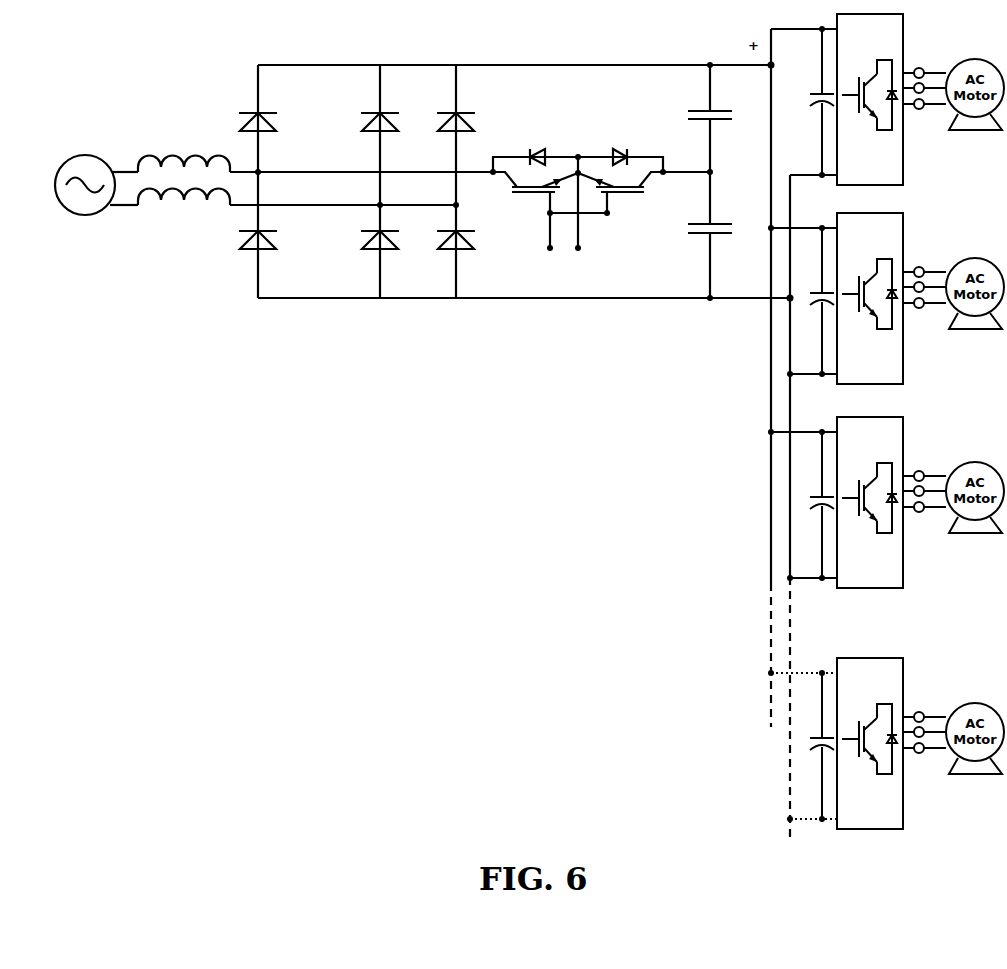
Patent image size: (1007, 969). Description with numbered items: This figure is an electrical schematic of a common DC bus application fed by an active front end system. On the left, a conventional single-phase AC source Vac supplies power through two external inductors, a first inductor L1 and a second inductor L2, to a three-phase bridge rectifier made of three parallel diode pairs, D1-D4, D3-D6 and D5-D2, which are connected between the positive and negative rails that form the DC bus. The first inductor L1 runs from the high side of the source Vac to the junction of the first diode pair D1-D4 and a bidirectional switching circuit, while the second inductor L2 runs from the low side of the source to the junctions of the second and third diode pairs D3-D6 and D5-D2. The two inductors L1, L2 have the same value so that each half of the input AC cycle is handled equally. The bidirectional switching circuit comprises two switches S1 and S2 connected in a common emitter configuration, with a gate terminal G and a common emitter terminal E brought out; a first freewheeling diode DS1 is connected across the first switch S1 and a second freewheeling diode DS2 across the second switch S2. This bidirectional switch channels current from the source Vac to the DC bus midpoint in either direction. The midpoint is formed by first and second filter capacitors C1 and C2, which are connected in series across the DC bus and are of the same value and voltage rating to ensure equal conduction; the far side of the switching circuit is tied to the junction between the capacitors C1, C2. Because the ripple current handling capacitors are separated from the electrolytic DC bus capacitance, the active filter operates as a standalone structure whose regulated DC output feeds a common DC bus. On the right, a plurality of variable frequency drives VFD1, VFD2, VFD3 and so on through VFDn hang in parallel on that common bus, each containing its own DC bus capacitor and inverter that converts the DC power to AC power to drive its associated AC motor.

The single-phase AC voltage source Vac is at (79, 174).
The first inductor L1 is at (184, 155).
The second inductor L2 is at (184, 219).
The diode D1 is at (270, 118).
The diode D2 is at (464, 231).
The diode D3 is at (388, 113).
The diode D4 is at (270, 236).
The diode D5 is at (464, 113).
The diode D6 is at (388, 231).
The first freewheeling diode DS1 is at (534, 145).
The second freewheeling diode DS2 is at (619, 145).
The first switch S1 is at (535, 192).
The second switch S2 is at (620, 192).
The gate terminal G is at (549, 241).
The emitter terminal E is at (576, 257).
The first filter capacitor C1 is at (725, 118).
The second filter capacitor C2 is at (727, 235).
The variable frequency drive 1 VFD1 is at (887, 99).
The variable frequency drive 2 VFD2 is at (886, 298).
The variable frequency drive 3 VFD3 is at (886, 502).
The variable frequency drive n VFDn is at (886, 743).